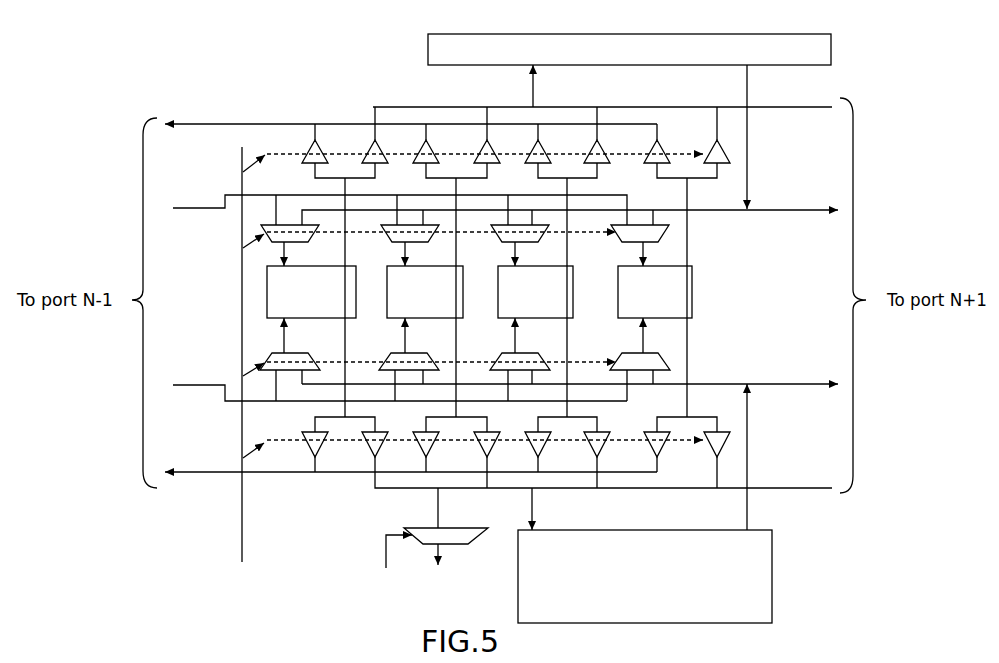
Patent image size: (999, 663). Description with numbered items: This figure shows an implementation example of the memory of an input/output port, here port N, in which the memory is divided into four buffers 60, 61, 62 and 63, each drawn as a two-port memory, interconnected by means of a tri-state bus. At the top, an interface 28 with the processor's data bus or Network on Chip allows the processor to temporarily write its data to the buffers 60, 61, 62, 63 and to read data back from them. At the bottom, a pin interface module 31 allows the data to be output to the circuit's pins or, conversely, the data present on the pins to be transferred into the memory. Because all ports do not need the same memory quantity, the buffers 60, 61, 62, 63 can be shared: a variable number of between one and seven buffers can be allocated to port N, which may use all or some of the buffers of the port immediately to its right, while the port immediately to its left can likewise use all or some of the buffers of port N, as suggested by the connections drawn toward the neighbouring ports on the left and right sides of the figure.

The interface 28 is at (428, 55).
The pin interface module 31 is at (772, 569).
The buffer 60 is at (357, 305).
The buffer 61 is at (463, 302).
The buffer 62 is at (573, 300).
The buffer 63 is at (692, 297).